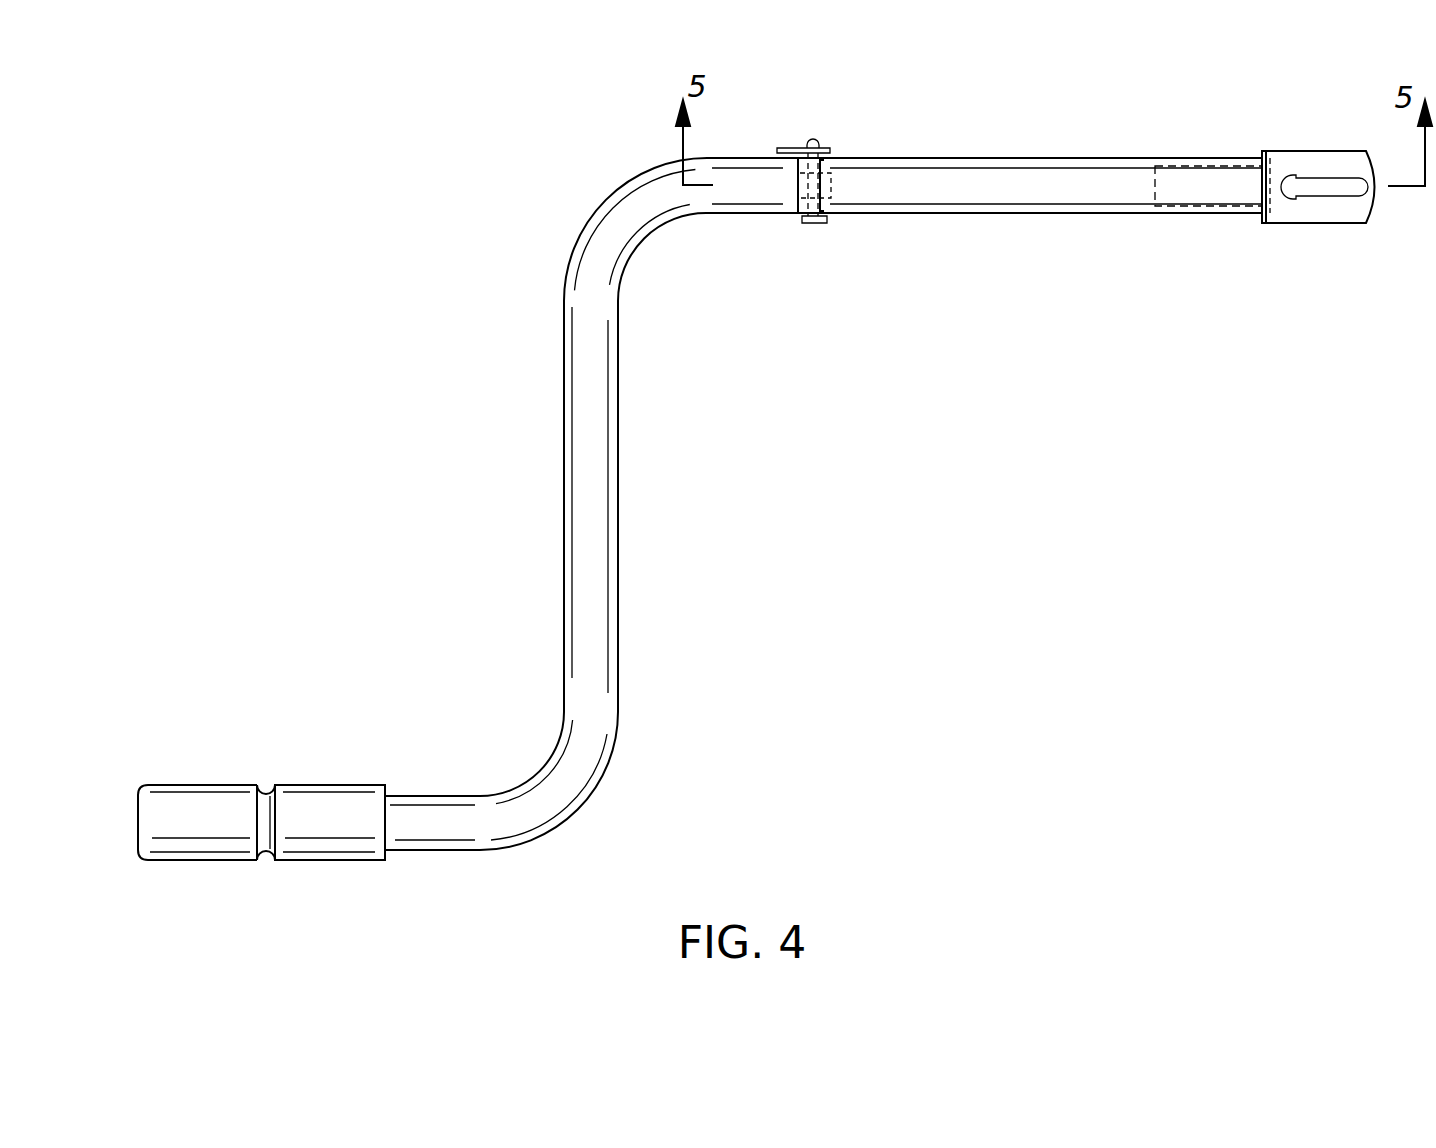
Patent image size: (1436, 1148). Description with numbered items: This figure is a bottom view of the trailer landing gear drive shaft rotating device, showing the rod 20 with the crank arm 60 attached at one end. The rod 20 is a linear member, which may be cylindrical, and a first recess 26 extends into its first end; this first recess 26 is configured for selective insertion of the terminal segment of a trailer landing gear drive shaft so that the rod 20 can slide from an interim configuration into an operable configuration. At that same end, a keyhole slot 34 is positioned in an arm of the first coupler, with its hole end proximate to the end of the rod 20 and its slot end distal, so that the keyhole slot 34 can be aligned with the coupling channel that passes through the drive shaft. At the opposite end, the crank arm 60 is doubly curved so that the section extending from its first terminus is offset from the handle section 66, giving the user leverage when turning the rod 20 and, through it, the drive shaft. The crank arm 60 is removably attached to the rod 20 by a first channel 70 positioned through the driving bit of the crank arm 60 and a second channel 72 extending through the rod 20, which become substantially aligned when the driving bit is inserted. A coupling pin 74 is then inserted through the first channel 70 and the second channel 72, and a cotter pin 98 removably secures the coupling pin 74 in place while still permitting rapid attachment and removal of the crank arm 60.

The rod 20 is at (968, 158).
The first recess 26 is at (1212, 188).
The keyhole slot 34 is at (1322, 185).
The crank arm 60 is at (615, 214).
The handle section 66 is at (333, 795).
The first channel 70 is at (808, 186).
The second channel 72 is at (822, 164).
The coupling pin 74 is at (816, 224).
The cotter pin 98 is at (828, 151).